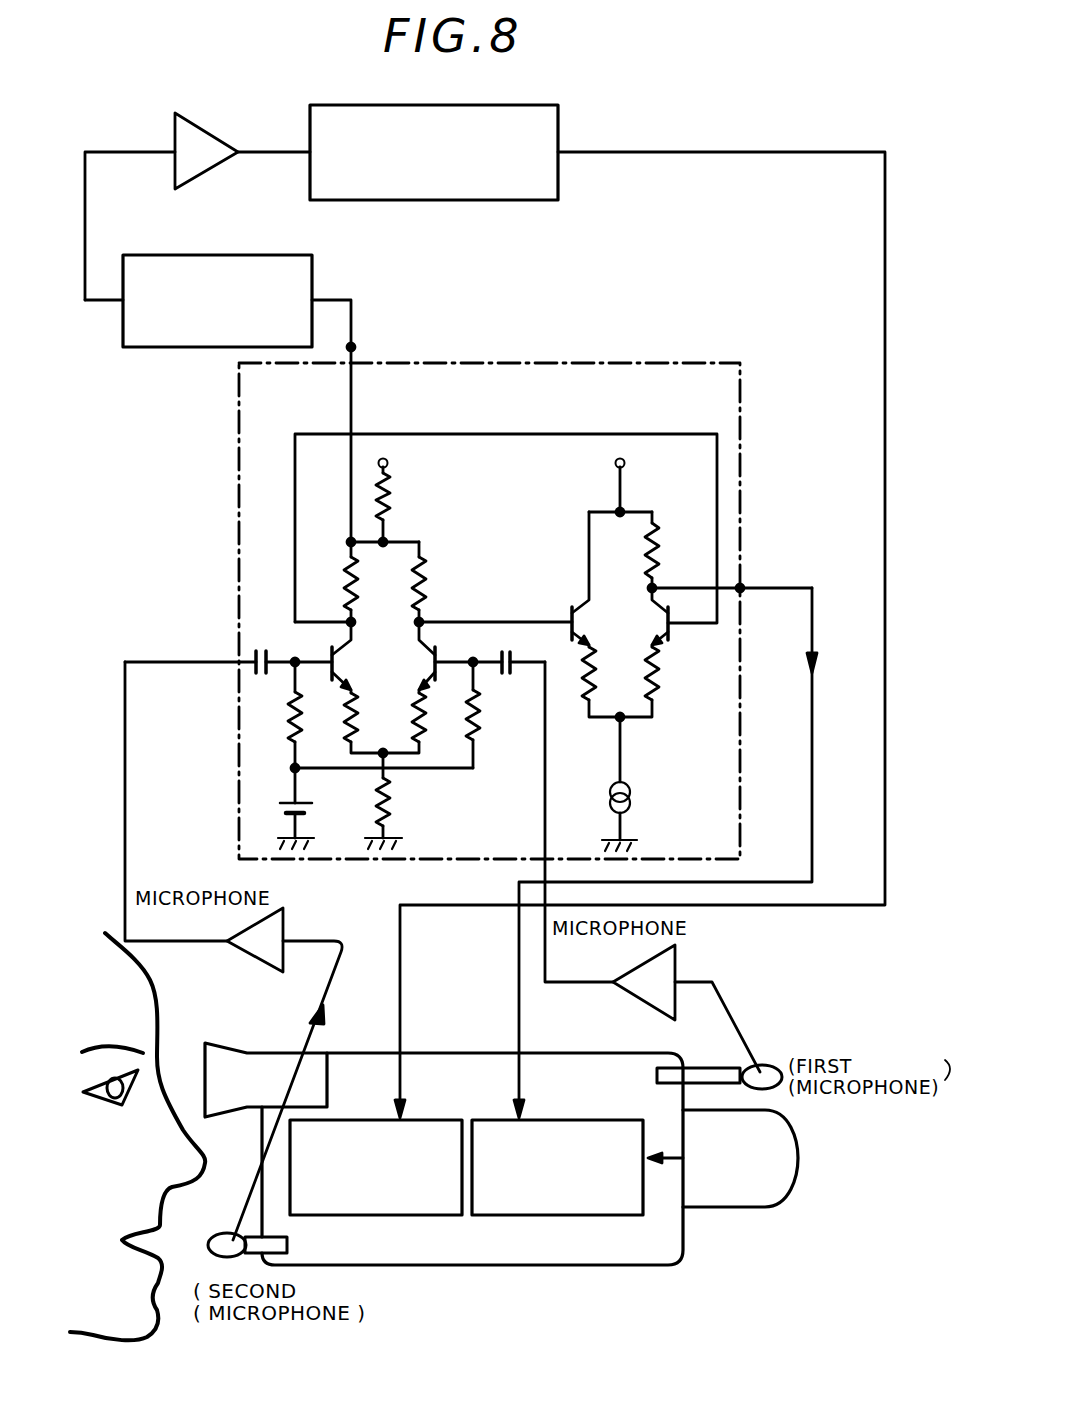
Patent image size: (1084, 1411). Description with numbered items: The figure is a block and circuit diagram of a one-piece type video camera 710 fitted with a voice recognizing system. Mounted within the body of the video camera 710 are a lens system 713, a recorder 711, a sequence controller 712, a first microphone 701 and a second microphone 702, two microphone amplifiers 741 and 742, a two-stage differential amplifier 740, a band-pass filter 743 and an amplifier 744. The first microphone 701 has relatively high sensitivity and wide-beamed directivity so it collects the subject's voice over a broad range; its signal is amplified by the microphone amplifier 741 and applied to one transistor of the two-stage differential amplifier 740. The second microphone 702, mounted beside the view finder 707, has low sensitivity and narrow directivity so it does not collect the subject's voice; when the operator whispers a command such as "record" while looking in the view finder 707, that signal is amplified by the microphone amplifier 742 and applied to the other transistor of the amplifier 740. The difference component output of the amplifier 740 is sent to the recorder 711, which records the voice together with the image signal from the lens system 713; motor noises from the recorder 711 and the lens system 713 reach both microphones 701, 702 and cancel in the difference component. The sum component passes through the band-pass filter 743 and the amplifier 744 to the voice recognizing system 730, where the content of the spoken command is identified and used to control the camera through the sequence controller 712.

The amplifier 744 is at (212, 130).
The voice recognizing system 730 is at (558, 105).
The band-pass filter 743 is at (234, 256).
The two-stage differential amplifier 740 is at (582, 362).
The microphone amplifier 742 is at (258, 962).
The microphone amplifier 741 is at (636, 997).
The view finder 707 is at (268, 1053).
The second microphone 702 is at (222, 1223).
The first microphone 701 is at (745, 1066).
The sequence controller 712 is at (434, 1119).
The recorder 711 is at (563, 1119).
The lens system 713 is at (705, 1207).
The video camera 710 is at (665, 1265).